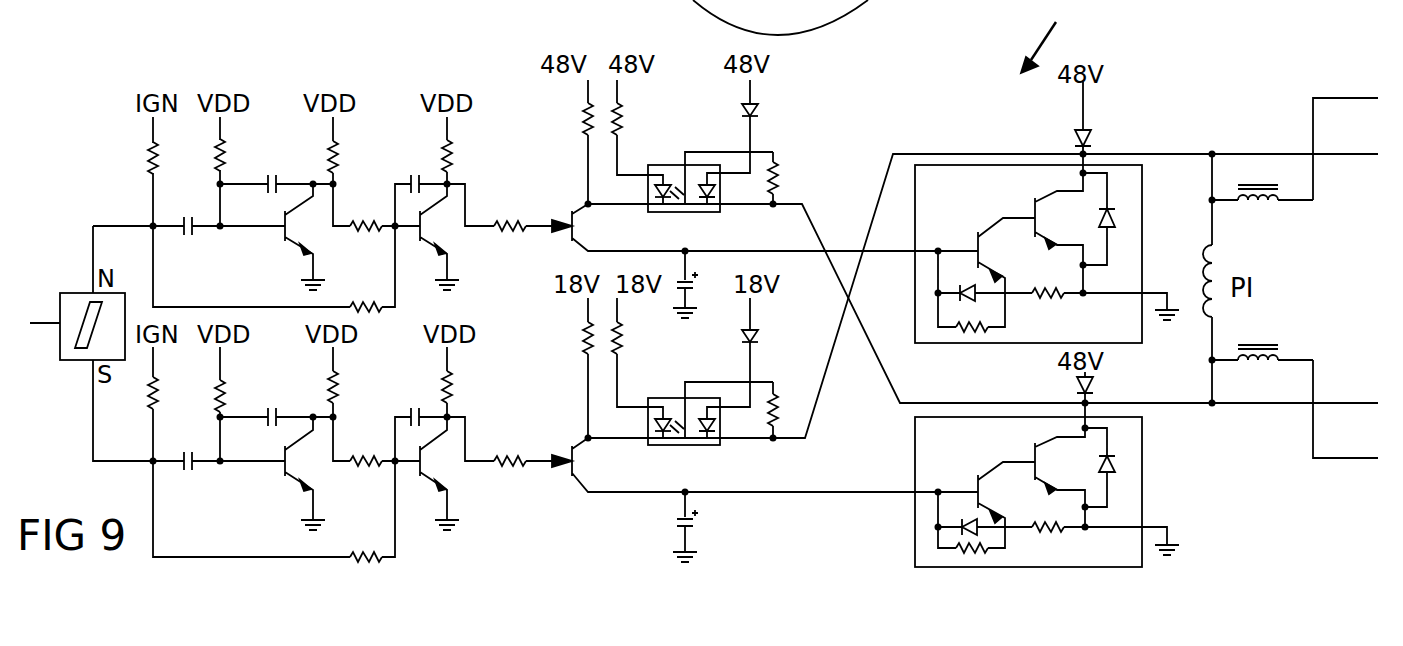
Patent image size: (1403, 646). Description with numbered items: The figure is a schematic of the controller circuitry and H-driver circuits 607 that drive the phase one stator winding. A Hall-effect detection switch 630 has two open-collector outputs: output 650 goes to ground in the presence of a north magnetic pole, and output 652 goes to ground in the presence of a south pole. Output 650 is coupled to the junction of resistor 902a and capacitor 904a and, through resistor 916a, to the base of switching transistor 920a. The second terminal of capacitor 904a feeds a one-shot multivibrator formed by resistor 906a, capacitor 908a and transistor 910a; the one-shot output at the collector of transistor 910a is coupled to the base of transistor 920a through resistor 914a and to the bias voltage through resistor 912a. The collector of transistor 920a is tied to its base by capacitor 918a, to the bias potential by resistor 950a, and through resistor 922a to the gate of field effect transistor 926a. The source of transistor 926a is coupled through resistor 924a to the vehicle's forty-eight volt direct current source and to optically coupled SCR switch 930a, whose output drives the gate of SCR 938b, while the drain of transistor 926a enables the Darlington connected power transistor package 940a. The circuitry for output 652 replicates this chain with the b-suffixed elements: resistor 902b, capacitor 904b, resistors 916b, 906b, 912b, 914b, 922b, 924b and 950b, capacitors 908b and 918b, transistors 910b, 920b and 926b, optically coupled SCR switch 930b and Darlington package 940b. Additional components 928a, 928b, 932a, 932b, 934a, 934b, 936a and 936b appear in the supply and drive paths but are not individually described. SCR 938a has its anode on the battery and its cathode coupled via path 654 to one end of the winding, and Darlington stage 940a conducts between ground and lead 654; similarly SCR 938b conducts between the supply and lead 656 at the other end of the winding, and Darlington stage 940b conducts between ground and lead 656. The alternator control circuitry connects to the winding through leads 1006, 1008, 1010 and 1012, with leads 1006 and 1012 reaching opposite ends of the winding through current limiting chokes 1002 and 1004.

The H-driver circuits 607 is at (1062, 12).
The magnetic sensor 630 is at (33, 320).
The switch output 650 is at (117, 226).
The switch output 652 is at (110, 462).
The path 654 is at (1173, 153).
The lead 656 is at (1173, 403).
The resistor 902a is at (158, 152).
The resistor 902b is at (152, 386).
The capacitor 904a is at (186, 235).
The capacitor 904b is at (190, 471).
The resistor 906a is at (227, 150).
The resistor 906b is at (227, 380).
The capacitor 908a is at (270, 178).
The capacitor 908b is at (262, 416).
The transistor 910a is at (290, 244).
The transistor 910b is at (287, 474).
The resistor 912a is at (338, 152).
The resistor 912b is at (339, 386).
The resistor 914a is at (357, 218).
The resistor 914b is at (360, 470).
The resistor 916a is at (352, 299).
The resistor 916b is at (378, 560).
The capacitor 918a is at (417, 176).
The capacitor 918b is at (410, 410).
The switching transistor 920a is at (430, 233).
The switching transistor 920b is at (430, 464).
The resistor 922a is at (497, 224).
The resistor 922b is at (497, 455).
The resistor 924a is at (582, 128).
The resistor 924b is at (582, 323).
The field effect transistor 926a is at (577, 228).
The field effect transistor 926b is at (577, 463).
The resistor 928a is at (627, 117).
The resistor 928b is at (652, 347).
The optically coupled SCR switch 930a is at (690, 214).
The optically coupled SCR switch 930b is at (690, 448).
The capacitor 932a is at (713, 290).
The capacitor 932b is at (693, 520).
The diode 934a is at (763, 115).
The diode 934b is at (757, 338).
The resistor 936a is at (779, 175).
The resistor 936b is at (790, 382).
The SCR 938a is at (1090, 143).
The SCR 938b is at (1093, 388).
The Darlington connected power transistor package 940a is at (997, 344).
The Darlington connected power transistor package 940b is at (913, 532).
The resistor 950a is at (457, 157).
The resistor 950b is at (457, 378).
The current limiting choke 1002 is at (1268, 202).
The current limiting choke 1004 is at (1283, 357).
The lead 1006 is at (1347, 98).
The lead 1008 is at (1350, 155).
The lead 1010 is at (1348, 400).
The lead 1012 is at (1350, 460).